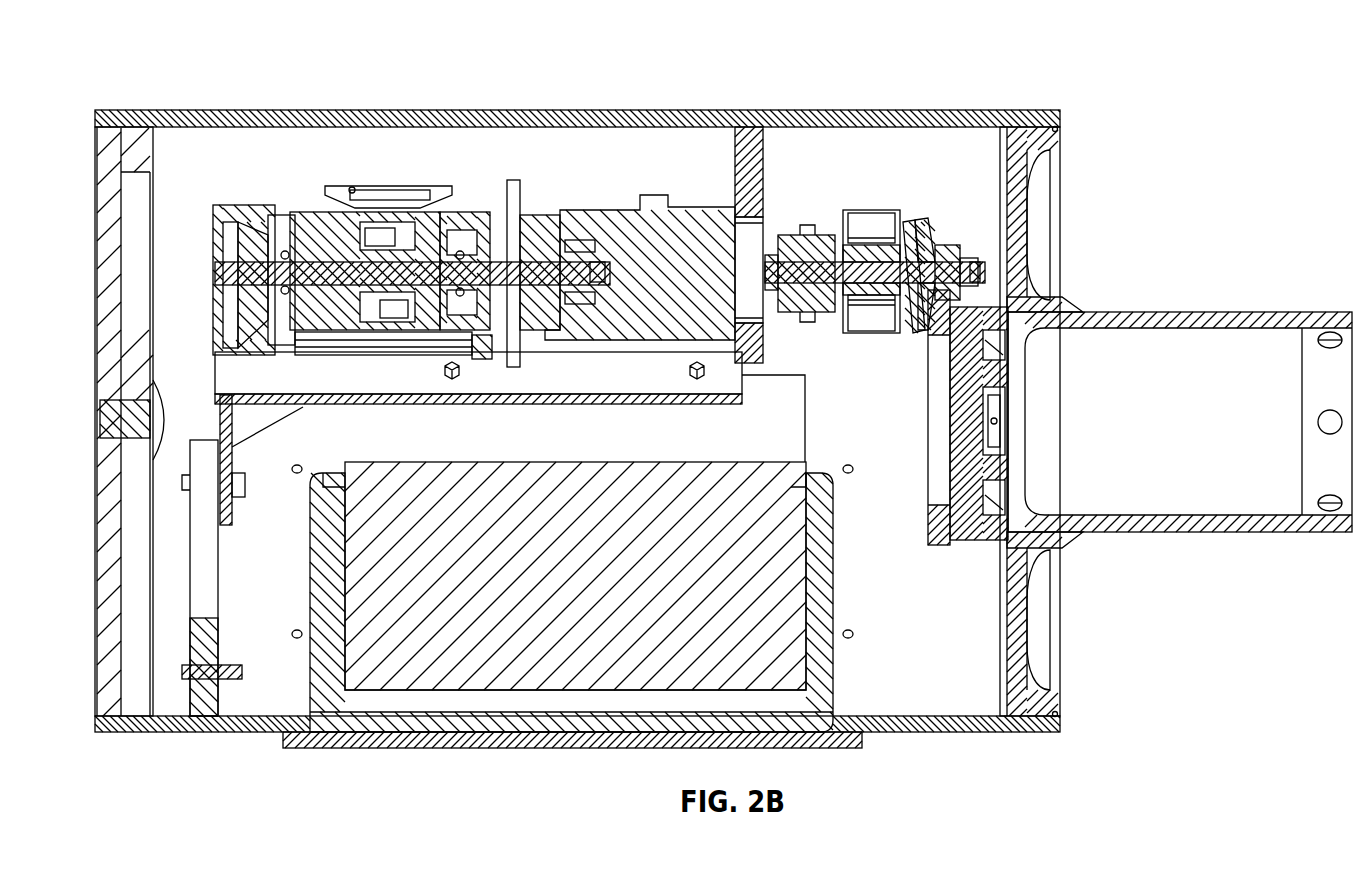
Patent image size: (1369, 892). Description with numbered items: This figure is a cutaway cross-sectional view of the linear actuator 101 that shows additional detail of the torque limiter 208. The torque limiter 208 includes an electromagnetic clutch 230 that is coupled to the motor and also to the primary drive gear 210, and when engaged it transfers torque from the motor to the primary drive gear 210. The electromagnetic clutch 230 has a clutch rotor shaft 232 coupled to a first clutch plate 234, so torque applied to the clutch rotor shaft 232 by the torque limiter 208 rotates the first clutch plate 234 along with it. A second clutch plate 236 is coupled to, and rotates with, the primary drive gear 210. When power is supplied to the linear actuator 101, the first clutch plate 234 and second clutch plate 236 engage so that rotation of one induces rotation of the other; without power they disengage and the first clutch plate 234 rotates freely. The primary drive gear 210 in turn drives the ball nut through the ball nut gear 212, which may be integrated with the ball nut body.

The linear actuator 101 is at (128, 85).
The torque limiter 208 is at (805, 233).
The primary drive gear 210 is at (975, 258).
The ball nut gear 212 is at (938, 410).
The electromagnetic clutch 230 is at (852, 200).
The clutch rotor shaft 232 is at (862, 310).
The first clutch plate 234 is at (918, 217).
The second clutch plate 236 is at (925, 222).